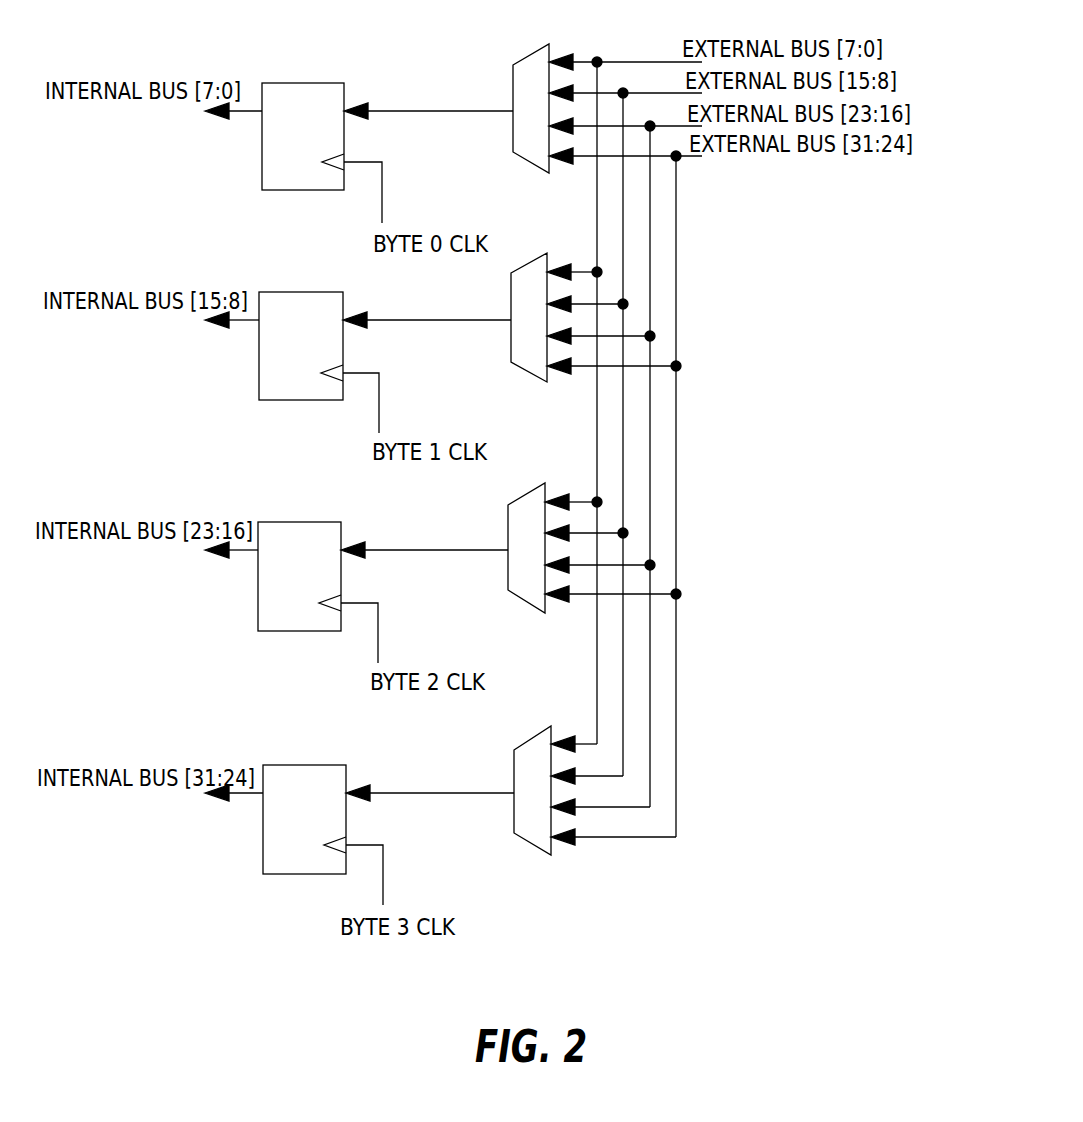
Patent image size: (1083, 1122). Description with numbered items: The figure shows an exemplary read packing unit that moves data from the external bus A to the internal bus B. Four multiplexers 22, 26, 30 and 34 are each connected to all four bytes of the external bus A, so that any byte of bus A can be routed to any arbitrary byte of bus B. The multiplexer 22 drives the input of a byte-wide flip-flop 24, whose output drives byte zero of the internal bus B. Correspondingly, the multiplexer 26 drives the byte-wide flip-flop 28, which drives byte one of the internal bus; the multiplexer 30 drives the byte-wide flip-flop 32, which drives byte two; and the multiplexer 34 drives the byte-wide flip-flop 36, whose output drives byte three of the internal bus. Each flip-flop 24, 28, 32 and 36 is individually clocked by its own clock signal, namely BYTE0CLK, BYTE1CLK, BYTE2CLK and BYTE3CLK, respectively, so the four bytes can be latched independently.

The multiplexer 22 is at (531, 108).
The byte-wide flip-flop 24 is at (303, 136).
The multiplexer 26 is at (529, 317).
The byte-wide flip-flop 28 is at (301, 346).
The multiplexer 30 is at (526, 548).
The byte-wide flip-flop 32 is at (299, 576).
The multiplexer 34 is at (532, 790).
The byte-wide flip-flop 36 is at (304, 819).